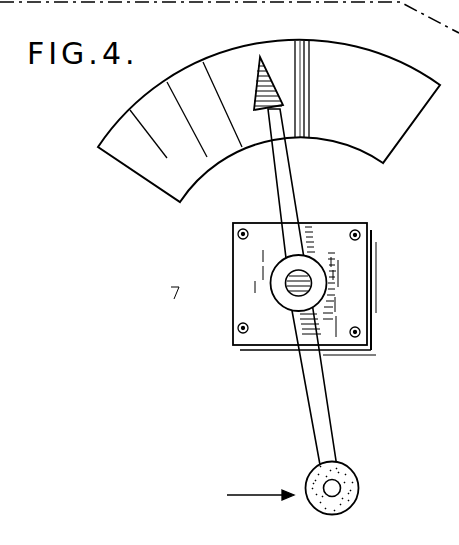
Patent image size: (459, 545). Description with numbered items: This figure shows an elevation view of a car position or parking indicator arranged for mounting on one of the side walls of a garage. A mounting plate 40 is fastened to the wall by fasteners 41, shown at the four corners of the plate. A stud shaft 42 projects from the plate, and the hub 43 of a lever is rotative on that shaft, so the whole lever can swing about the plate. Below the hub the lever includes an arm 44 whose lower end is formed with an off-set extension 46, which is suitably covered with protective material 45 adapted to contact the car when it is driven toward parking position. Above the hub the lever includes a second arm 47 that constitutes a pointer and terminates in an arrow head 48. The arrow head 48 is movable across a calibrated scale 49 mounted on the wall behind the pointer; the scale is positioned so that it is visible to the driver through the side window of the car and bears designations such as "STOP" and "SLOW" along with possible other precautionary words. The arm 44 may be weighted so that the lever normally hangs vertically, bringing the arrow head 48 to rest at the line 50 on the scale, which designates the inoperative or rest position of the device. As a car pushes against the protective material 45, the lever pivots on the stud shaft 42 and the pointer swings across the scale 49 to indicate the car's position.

The mounting plate 40 is at (358, 280).
The fasteners 41 is at (243, 228).
The stud shaft 42 is at (290, 288).
The hub 43 is at (304, 264).
The arm 44 is at (318, 382).
The protective material 45 is at (355, 479).
The off-set extension 46 is at (334, 486).
The arm 47 is at (287, 186).
The arrow head 48 is at (266, 66).
The calibrated scale 49 is at (363, 66).
The line 50 is at (305, 100).